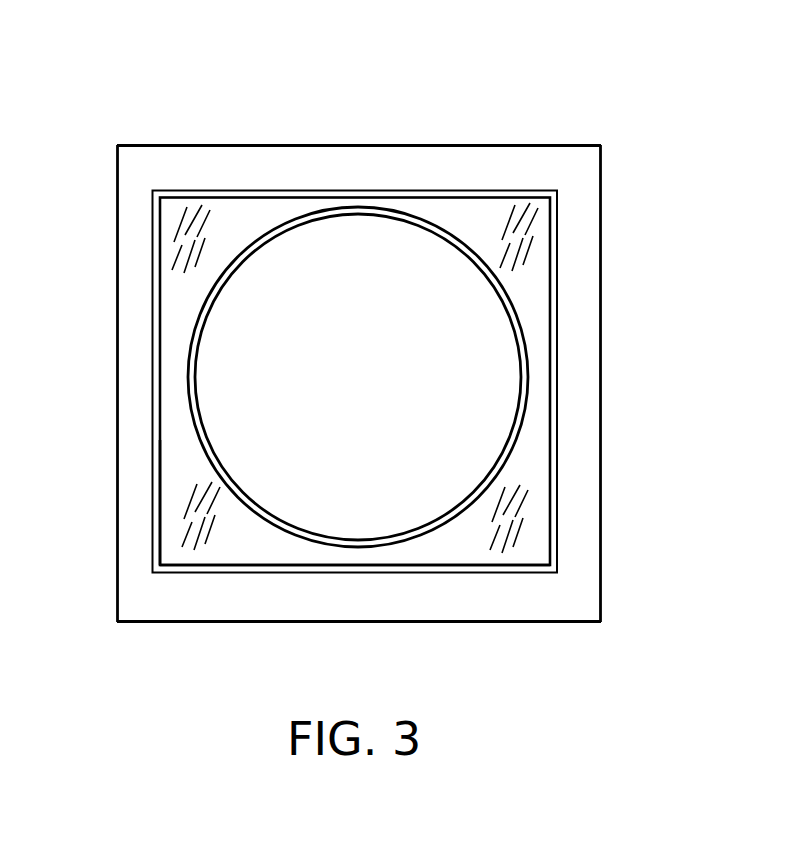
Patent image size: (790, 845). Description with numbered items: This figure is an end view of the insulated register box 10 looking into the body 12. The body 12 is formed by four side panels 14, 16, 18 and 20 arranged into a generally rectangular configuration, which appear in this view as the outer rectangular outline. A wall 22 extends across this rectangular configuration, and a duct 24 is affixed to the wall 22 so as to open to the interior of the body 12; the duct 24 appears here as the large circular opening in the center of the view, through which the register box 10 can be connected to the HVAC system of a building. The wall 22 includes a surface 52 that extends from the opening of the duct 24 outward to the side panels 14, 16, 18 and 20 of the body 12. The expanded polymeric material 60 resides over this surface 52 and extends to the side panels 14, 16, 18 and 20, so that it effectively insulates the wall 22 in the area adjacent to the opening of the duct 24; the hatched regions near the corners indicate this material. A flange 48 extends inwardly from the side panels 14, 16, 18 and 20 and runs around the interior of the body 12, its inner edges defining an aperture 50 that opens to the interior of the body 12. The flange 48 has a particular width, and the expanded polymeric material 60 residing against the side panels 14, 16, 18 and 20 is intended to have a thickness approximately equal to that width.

The insulated register box 10 is at (622, 55).
The body 12 is at (369, 388).
The side panel 14 is at (602, 489).
The side panel 16 is at (520, 623).
The side panel 18 is at (117, 417).
The side panel 20 is at (542, 145).
The wall 22 is at (183, 476).
The duct 24 is at (252, 256).
The flange 48 is at (584, 437).
The aperture 50 is at (162, 297).
The surface 52 is at (210, 558).
The expanded polymeric material 60 is at (538, 535).